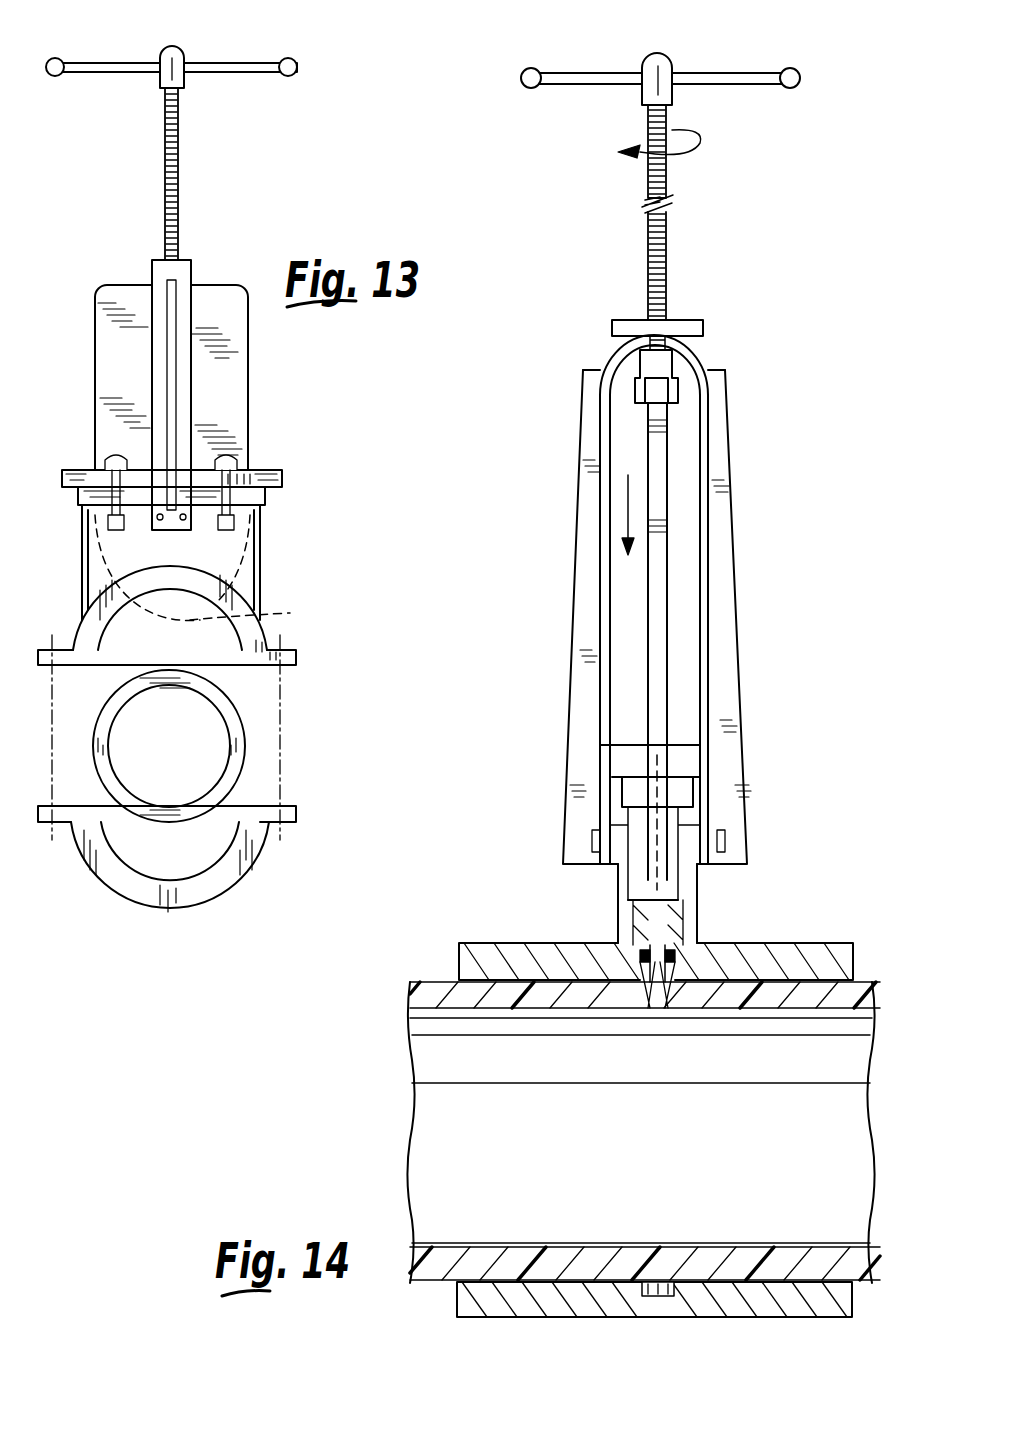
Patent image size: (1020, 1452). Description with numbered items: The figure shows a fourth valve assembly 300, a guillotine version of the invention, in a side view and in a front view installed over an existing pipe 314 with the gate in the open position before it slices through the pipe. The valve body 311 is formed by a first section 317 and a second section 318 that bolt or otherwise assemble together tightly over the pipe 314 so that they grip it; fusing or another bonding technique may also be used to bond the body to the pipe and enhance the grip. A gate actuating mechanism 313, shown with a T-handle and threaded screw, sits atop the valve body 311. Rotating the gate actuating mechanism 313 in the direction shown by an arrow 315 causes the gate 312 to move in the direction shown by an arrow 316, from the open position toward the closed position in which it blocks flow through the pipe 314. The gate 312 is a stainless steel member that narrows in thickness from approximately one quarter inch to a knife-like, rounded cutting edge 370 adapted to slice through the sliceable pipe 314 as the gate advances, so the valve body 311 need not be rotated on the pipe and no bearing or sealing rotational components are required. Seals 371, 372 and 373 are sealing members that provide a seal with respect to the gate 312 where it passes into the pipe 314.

In FIG. 13, the fourth valve assembly 300 is at (326, 109).
In FIG. 14, the fourth valve assembly 300 is at (818, 188).
In FIG. 13, the valve body 311 is at (262, 579).
In FIG. 14, the valve body 311 is at (694, 901).
In FIG. 13, the gate 312 is at (248, 560).
In FIG. 14, the gate 312 is at (665, 610).
In FIG. 13, the gate actuating mechanism 313 is at (180, 182).
In FIG. 14, the gate actuating mechanism 313 is at (668, 285).
In FIG. 13, the pipe 314 is at (240, 750).
In FIG. 14, the pipe 314 is at (428, 967).
In FIG. 14, the arrow 315 is at (700, 143).
In FIG. 14, the arrow 316 is at (628, 520).
In FIG. 13, the first section 317 is at (268, 660).
In FIG. 14, the first section 317 is at (855, 965).
In FIG. 13, the second section 318 is at (296, 822).
In FIG. 14, the second section 318 is at (828, 1295).
In FIG. 13, the cutting edge 370 is at (290, 614).
In FIG. 14, the cutting edge 370 is at (657, 975).
In FIG. 14, the seal 371 is at (620, 943).
In FIG. 14, the seal 372 is at (700, 943).
In FIG. 14, the seal 373 is at (648, 1295).